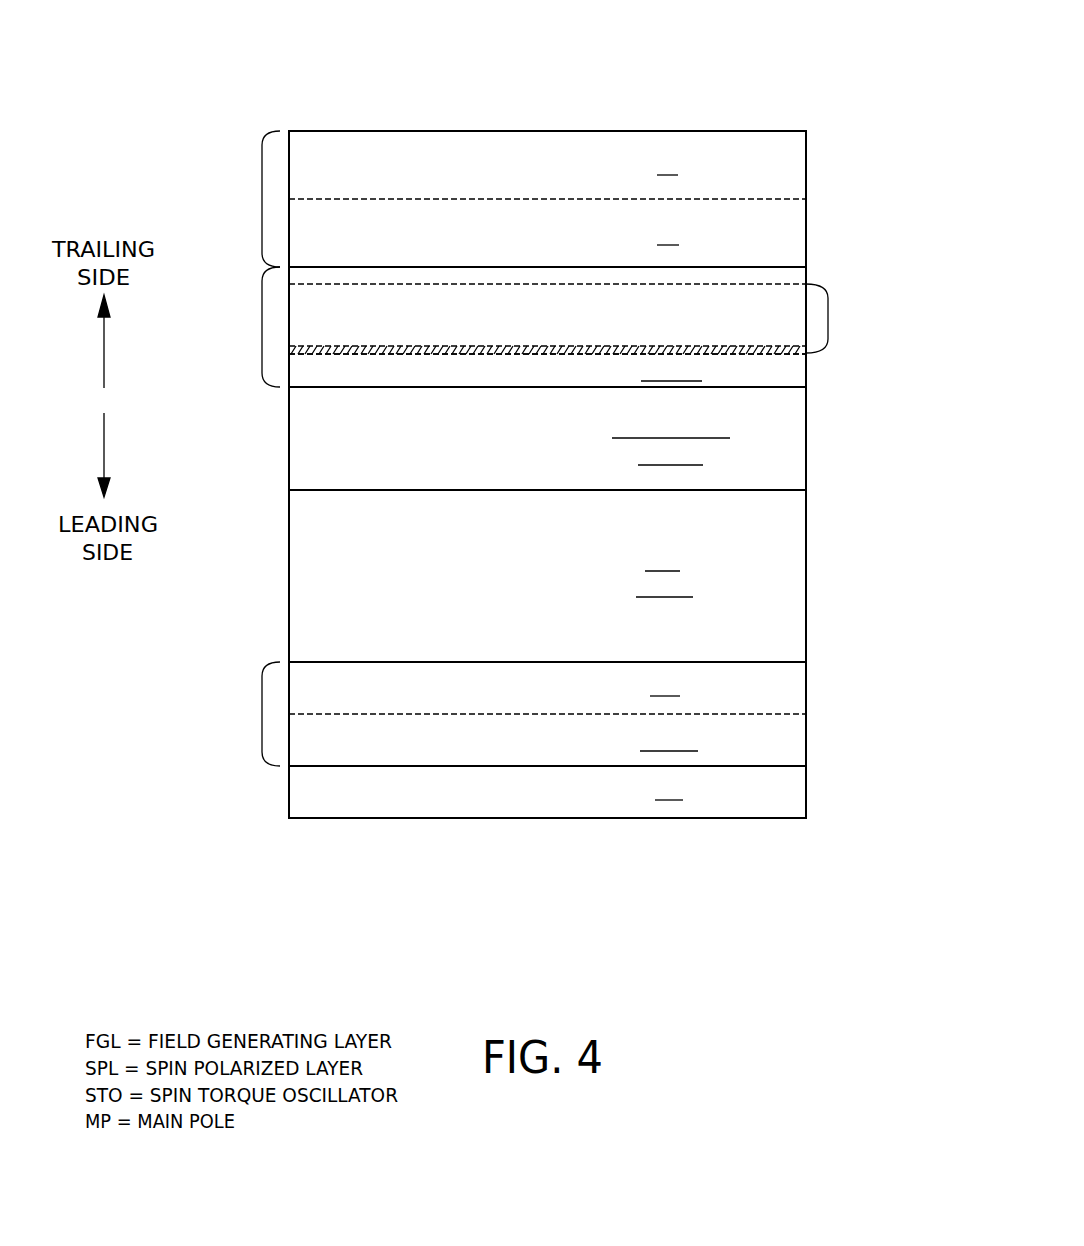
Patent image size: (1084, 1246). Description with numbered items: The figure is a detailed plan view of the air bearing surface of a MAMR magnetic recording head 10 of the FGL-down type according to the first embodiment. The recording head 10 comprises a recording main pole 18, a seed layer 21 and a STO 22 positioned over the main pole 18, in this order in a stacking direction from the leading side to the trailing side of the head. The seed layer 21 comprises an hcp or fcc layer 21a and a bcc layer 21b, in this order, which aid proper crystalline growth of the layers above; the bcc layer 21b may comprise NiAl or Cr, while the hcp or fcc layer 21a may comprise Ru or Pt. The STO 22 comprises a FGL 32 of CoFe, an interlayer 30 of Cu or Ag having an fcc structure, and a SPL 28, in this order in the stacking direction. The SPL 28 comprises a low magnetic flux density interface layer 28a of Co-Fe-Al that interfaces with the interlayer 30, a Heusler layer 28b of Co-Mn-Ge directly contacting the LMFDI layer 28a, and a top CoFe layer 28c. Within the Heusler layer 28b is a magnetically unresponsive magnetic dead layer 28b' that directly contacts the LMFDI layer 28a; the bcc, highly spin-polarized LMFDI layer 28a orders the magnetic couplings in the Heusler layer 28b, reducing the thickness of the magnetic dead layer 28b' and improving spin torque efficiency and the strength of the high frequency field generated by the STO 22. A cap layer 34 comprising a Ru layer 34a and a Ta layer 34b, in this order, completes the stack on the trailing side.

The MAMR magnetic recording head 10 is at (289, 38).
The spin torque oscillator (STO) 22 is at (828, 584).
The cap layer 34 is at (262, 199).
The Ta layer 34b is at (561, 175).
The Ru layer 34a is at (561, 245).
The spin polarizing layer (SPL) 28 is at (262, 327).
The top CoFe layer 28c is at (795, 277).
The Heusler layer 28b is at (613, 319).
The magnetic dead layer 28b' is at (497, 385).
The low magnetic flux density interface (LMFDI) layer 28a is at (561, 381).
The interlayer 30 is at (558, 452).
The field generating layer (FGL) 32 is at (558, 585).
The seed layer 21 is at (262, 714).
The bcc layer 21b is at (561, 698).
The hcp or fcc layer 21a is at (561, 751).
The main pole 18 is at (558, 800).